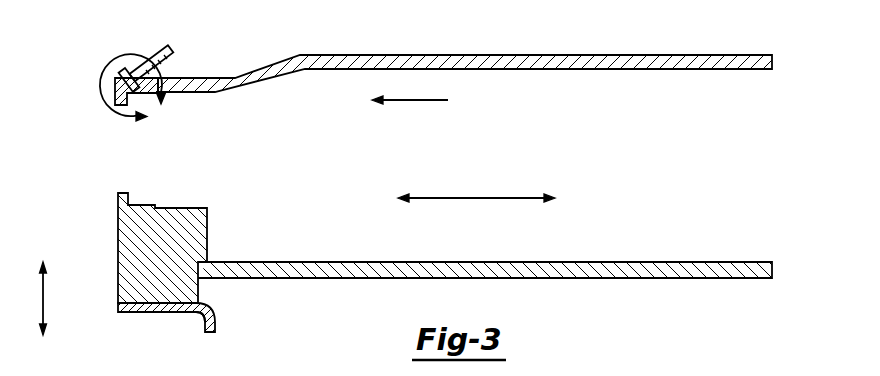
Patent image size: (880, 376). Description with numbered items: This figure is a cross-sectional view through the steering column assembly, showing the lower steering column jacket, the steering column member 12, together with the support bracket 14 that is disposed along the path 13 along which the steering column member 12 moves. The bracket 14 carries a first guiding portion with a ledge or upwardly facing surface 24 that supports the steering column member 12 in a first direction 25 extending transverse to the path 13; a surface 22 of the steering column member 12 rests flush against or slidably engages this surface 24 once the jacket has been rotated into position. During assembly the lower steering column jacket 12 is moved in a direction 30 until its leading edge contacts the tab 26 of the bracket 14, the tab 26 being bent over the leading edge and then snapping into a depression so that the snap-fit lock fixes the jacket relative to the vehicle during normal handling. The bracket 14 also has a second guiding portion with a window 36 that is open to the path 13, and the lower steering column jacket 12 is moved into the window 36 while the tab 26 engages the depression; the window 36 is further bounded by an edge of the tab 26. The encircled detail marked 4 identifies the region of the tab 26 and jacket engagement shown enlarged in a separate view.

The steering column member 12 is at (618, 278).
The path 13 is at (477, 198).
The support bracket 14 is at (218, 319).
The surface 22 is at (153, 308).
The ledge 24 is at (142, 296).
The first direction 25 is at (43, 300).
The tab 26 is at (126, 42).
The direction 30 is at (427, 100).
The window 36 is at (125, 152).
The section view indicator 4 is at (153, 120).